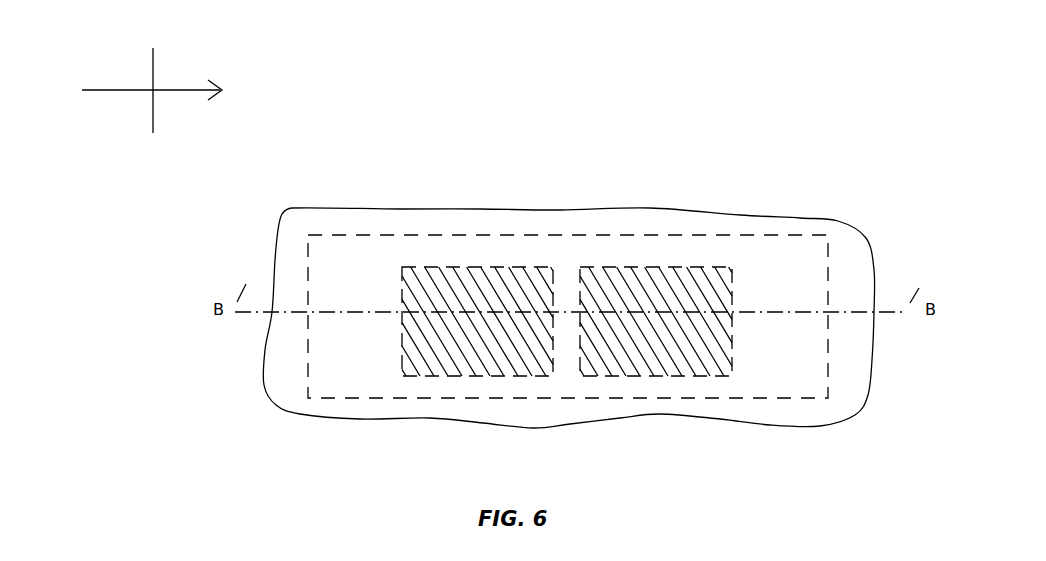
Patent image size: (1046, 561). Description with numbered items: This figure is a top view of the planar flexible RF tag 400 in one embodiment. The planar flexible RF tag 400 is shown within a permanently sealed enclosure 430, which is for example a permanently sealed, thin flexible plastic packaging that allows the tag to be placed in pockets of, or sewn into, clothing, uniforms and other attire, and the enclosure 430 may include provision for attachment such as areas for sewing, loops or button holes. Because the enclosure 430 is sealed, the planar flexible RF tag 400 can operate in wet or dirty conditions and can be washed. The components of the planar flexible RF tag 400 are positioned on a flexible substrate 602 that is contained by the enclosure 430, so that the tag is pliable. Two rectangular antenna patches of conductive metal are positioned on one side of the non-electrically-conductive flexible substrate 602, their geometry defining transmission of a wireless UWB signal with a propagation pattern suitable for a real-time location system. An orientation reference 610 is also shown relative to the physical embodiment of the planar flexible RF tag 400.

The orientation reference 610 is at (124, 57).
The planar flexible RF tag 400 is at (892, 184).
The permanently sealed enclosure 430 is at (296, 225).
The flexible substrate 602 is at (790, 258).